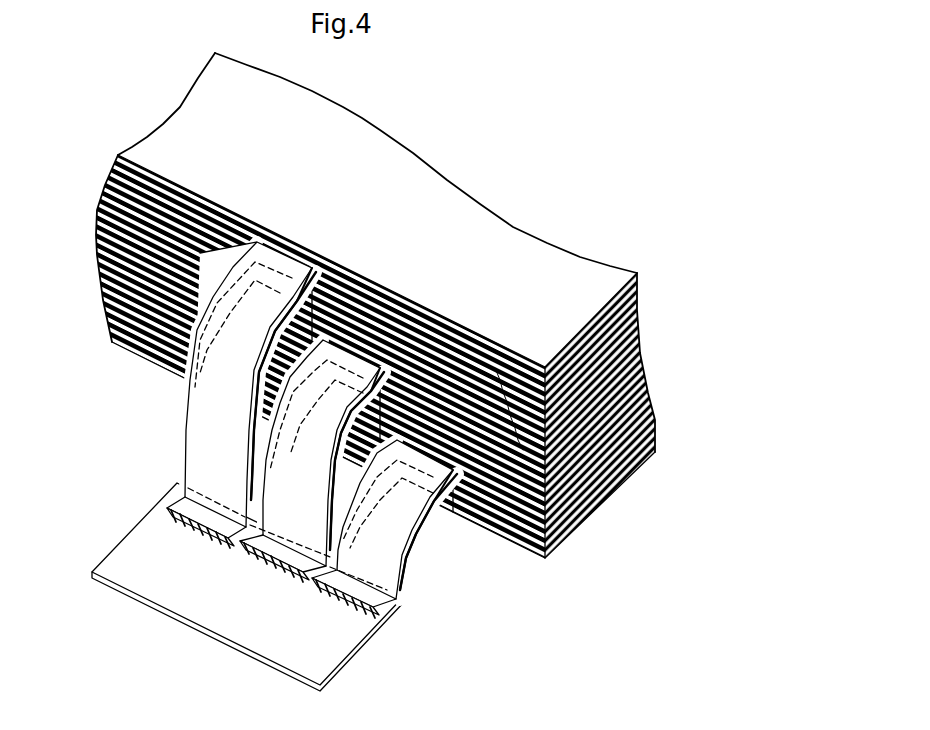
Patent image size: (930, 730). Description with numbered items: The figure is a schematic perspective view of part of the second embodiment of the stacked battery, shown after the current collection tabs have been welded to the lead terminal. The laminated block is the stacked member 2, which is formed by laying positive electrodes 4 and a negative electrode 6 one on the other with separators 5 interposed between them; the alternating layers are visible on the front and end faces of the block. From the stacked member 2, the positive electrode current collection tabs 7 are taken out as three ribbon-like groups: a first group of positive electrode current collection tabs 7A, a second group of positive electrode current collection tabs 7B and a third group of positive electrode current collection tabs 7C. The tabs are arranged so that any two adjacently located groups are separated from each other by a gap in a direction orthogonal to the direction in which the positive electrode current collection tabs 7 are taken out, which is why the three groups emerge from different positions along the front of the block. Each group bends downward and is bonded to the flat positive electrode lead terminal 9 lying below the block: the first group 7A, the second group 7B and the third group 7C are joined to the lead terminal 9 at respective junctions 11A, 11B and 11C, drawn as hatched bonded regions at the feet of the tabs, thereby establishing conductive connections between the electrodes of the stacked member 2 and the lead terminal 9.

The stacked member 2 is at (459, 168).
The positive electrodes 4 is at (565, 533).
The separators 5 is at (562, 433).
The negative electrode 6 is at (513, 353).
The positive electrode current collection tabs 7 is at (295, 454).
The first group of positive electrode current collection tabs 7A is at (433, 580).
The second group of positive electrode current collection tabs 7B is at (244, 489).
The third group of positive electrode current collection tabs 7C is at (168, 397).
The positive electrode lead terminal 9 is at (182, 587).
The junction 11A is at (350, 607).
The junction 11B is at (267, 550).
The junction 11C is at (147, 515).